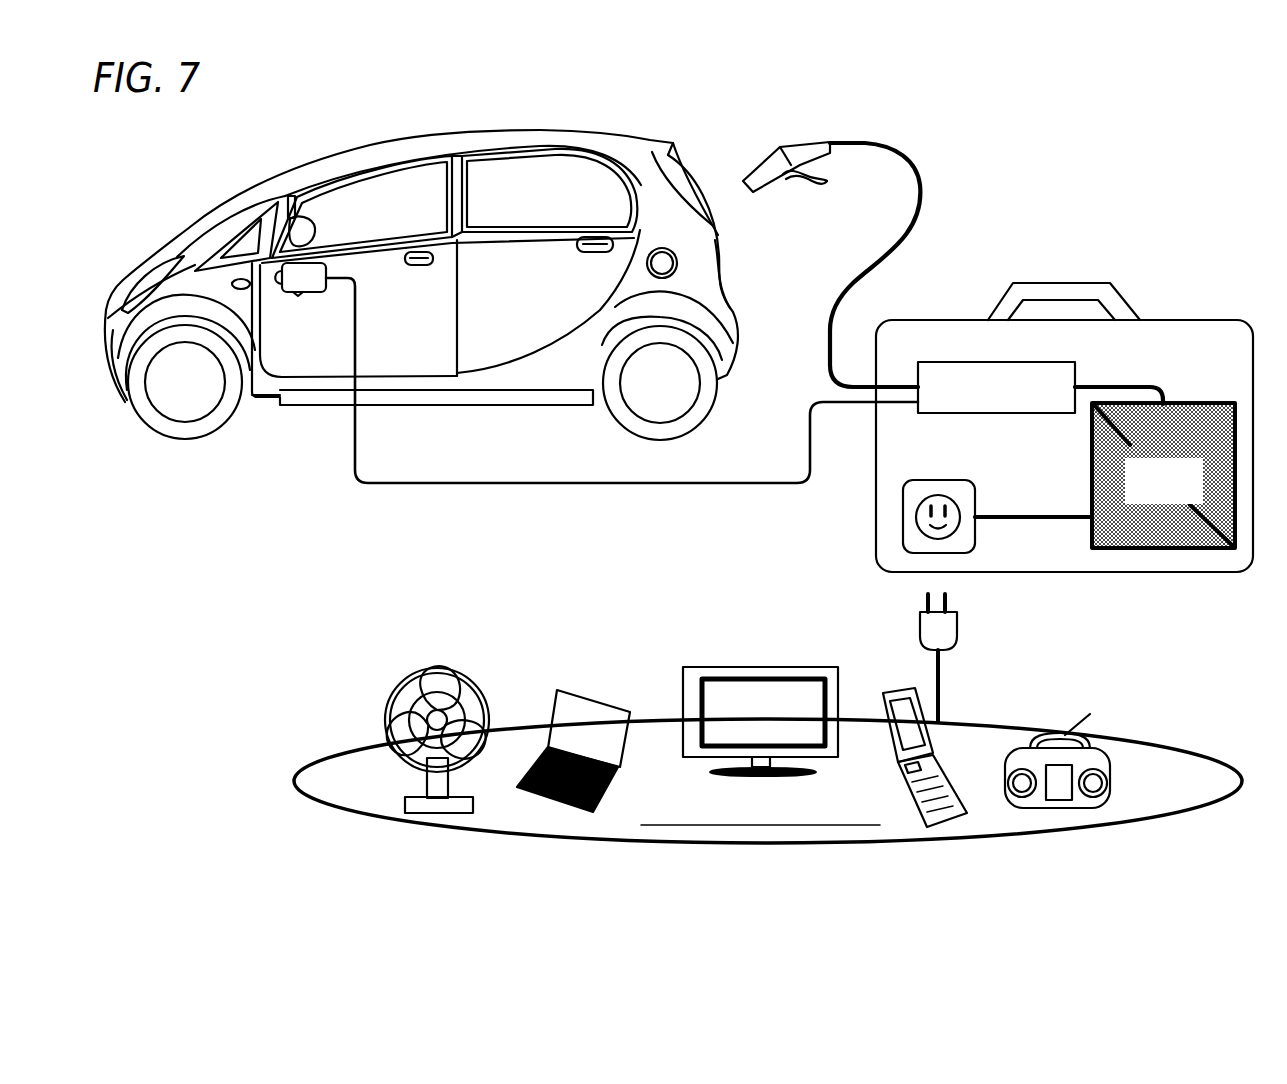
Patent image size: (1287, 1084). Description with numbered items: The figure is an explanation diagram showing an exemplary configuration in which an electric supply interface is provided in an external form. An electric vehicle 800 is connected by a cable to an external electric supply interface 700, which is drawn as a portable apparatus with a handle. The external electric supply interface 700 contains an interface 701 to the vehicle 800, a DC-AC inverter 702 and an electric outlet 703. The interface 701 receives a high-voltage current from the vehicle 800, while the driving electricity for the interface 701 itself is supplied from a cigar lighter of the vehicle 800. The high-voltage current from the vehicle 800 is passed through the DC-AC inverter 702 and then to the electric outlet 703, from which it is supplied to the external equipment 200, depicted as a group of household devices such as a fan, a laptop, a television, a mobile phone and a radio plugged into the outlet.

The vehicle 800 is at (594, 132).
The external electric supply interface 700 is at (1208, 333).
The interface 701 is at (950, 362).
The DC-AC inverter 702 is at (1237, 520).
The electric outlet 703 is at (912, 536).
The external equipment 200 is at (1145, 765).